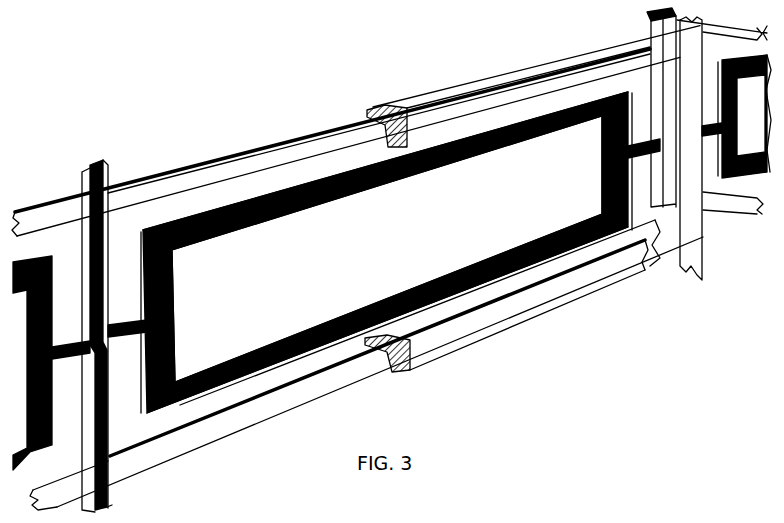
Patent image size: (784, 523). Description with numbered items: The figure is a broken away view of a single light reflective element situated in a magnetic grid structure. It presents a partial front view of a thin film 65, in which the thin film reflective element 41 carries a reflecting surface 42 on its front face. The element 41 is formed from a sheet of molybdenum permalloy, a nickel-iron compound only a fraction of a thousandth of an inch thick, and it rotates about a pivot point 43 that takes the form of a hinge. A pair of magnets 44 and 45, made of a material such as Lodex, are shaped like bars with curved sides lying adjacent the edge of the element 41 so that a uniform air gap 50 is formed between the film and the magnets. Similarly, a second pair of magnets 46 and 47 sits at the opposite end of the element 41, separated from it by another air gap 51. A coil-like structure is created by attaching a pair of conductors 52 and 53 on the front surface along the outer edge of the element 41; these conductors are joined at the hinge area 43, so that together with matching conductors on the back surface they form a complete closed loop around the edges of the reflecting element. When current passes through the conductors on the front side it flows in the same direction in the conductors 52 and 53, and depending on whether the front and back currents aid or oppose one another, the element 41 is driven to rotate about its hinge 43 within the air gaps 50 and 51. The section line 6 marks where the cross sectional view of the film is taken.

The section line 6- 6 is at (505, 232).
The thin film reflective element 41 is at (283, 187).
The reflecting surface 42 is at (572, 290).
The pivot point 43 is at (687, 233).
The magnet 44 is at (566, 66).
The magnet 45 is at (606, 78).
The magnet 46 is at (638, 233).
The magnet 47 is at (543, 294).
The air gap 50 is at (435, 141).
The air gap 51 is at (440, 300).
The conductor 52 is at (207, 209).
The conductor 53 is at (250, 378).
The thin film 65 is at (215, 160).